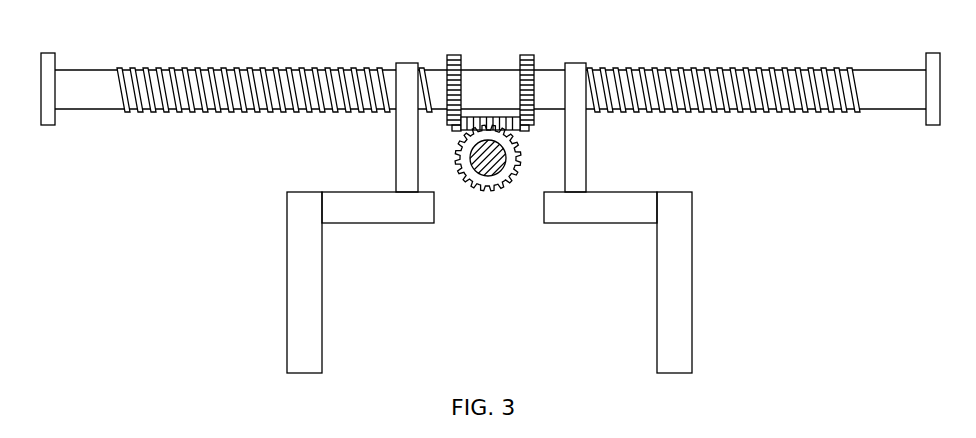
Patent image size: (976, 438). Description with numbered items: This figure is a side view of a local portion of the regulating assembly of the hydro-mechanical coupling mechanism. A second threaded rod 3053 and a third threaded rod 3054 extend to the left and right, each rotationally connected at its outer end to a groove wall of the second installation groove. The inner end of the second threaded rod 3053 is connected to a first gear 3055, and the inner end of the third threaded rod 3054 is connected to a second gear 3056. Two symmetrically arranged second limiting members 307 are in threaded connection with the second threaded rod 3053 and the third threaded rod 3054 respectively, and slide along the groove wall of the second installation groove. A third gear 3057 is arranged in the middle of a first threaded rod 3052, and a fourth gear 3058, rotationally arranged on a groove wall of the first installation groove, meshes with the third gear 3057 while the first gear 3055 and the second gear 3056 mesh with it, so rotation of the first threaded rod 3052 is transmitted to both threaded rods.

The second limiting member 307 is at (576, 62).
The first threaded rod 3052 is at (503, 150).
The second threaded rod 3053 is at (103, 76).
The third threaded rod 3054 is at (743, 68).
The first gear 3055 is at (450, 55).
The second gear 3056 is at (527, 55).
The third gear 3057 is at (488, 188).
The fourth gear 3058 is at (520, 118).